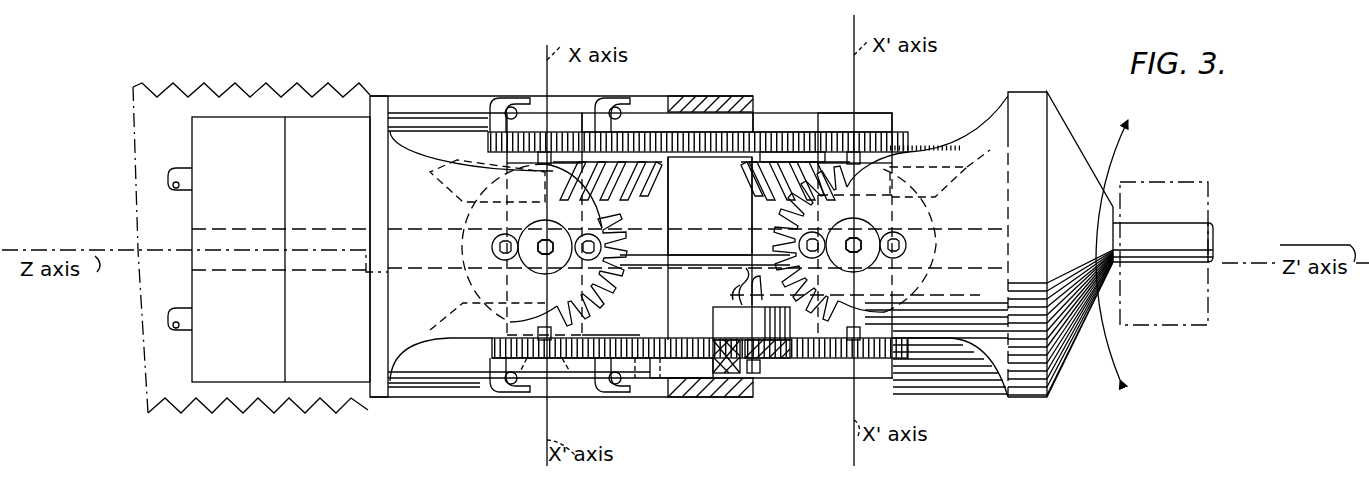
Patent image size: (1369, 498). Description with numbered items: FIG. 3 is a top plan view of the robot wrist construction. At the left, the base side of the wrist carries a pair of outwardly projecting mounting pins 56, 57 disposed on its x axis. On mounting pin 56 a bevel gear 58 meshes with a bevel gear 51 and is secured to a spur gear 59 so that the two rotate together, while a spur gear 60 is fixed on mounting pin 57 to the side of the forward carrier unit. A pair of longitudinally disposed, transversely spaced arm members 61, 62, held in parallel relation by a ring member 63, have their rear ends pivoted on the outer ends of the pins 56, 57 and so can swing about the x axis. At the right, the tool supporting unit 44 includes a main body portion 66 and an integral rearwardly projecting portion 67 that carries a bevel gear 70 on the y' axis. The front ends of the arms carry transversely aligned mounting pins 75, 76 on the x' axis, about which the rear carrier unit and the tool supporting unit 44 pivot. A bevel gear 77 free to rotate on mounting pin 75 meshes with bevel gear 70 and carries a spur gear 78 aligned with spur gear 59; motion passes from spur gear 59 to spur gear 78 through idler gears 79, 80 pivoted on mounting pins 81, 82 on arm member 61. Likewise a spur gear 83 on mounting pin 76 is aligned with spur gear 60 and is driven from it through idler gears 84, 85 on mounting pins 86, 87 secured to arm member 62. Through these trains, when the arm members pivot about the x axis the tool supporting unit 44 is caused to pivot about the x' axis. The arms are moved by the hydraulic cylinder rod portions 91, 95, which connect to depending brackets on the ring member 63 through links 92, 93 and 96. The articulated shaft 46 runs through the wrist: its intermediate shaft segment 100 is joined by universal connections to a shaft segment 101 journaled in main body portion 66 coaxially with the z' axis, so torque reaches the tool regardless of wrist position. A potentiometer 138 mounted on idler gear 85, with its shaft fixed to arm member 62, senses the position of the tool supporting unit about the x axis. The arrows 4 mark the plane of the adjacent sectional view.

The section line 4- 4 is at (173, 282).
The tool supporting unit 44 is at (992, 112).
The articulated shaft 46 is at (1188, 222).
The bevel gear 51 is at (606, 291).
The mounting pin 56 is at (492, 160).
The mounting pin 57 is at (530, 333).
The bevel gear 58 is at (620, 182).
The spur gear 59 is at (492, 125).
The spur gear 60 is at (497, 360).
The arm member 61 is at (802, 130).
The arm member 62 is at (614, 381).
The ring member 63 is at (714, 84).
The main body portion 66 is at (1060, 372).
The rearwardly projecting portion 67 is at (975, 292).
The bevel gear 70 is at (790, 208).
The mounting pin 75 is at (862, 120).
The mounting pin 76 is at (853, 376).
The bevel gear 77 is at (754, 172).
The spur gear 78 is at (906, 146).
The idler gear 79 is at (628, 165).
The idler gear 80 is at (762, 128).
The mounting pin 81 is at (655, 122).
The mounting pin 82 is at (770, 122).
The spur gear 83 is at (906, 349).
The idler gear 84 is at (646, 340).
The idler gear 85 is at (798, 360).
The mounting pin 86 is at (652, 397).
The mounting pin 87 is at (753, 378).
The rod portion 91 is at (420, 395).
The link 92 is at (547, 396).
The link 93 is at (664, 397).
The rod portion 95 is at (446, 88).
The link 96 is at (582, 120).
The intermediate shaft segment 100 is at (716, 251).
The shaft segment 101 is at (1186, 250).
The potentiometer 138 is at (716, 310).